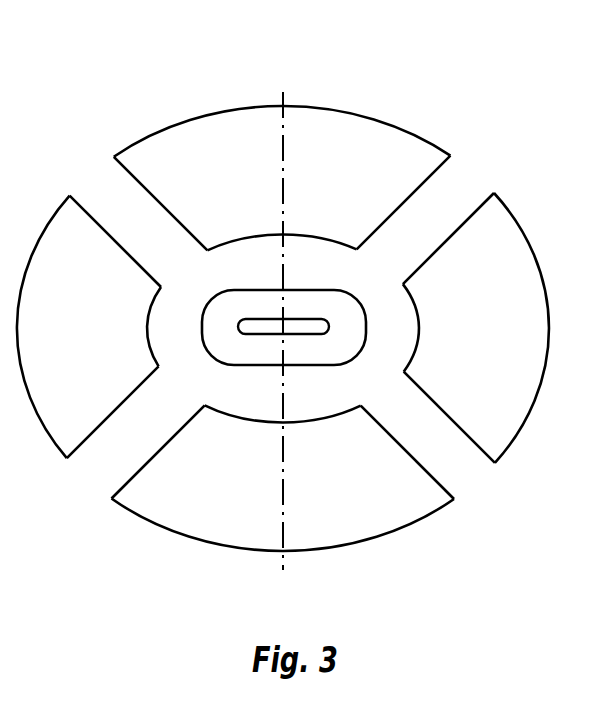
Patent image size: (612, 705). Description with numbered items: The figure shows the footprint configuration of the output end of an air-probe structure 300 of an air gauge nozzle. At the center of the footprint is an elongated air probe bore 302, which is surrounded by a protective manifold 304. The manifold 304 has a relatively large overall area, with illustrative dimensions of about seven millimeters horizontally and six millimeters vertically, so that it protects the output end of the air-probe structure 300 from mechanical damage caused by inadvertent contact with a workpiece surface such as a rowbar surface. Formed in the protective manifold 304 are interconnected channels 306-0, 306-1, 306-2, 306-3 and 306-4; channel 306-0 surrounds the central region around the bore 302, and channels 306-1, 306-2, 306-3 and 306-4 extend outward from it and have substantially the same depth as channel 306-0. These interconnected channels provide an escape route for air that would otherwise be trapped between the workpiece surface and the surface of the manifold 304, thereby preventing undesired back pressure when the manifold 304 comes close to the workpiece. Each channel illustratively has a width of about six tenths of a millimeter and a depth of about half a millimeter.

The air-probe structure 300 is at (308, 39).
The air probe bore 302 is at (305, 323).
The protective manifold 304 is at (283, 328).
The channel 306-0 is at (283, 328).
The channel 306-1 is at (128, 222).
The channel 306-2 is at (432, 220).
The channel 306-3 is at (128, 432).
The channel 306-4 is at (439, 435).